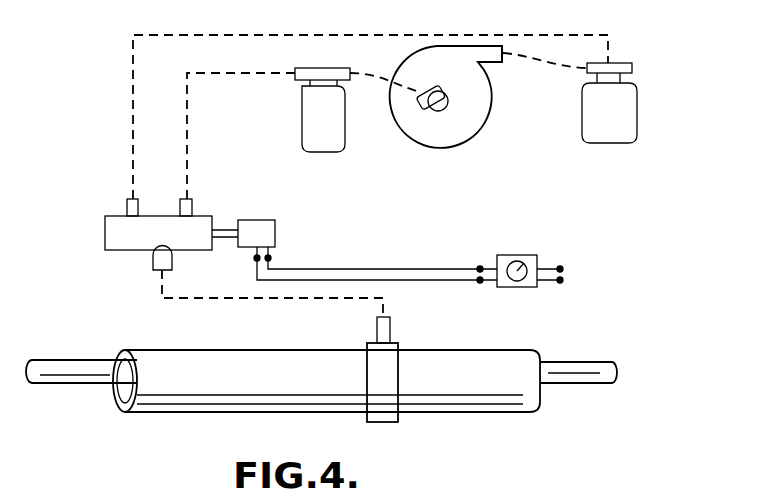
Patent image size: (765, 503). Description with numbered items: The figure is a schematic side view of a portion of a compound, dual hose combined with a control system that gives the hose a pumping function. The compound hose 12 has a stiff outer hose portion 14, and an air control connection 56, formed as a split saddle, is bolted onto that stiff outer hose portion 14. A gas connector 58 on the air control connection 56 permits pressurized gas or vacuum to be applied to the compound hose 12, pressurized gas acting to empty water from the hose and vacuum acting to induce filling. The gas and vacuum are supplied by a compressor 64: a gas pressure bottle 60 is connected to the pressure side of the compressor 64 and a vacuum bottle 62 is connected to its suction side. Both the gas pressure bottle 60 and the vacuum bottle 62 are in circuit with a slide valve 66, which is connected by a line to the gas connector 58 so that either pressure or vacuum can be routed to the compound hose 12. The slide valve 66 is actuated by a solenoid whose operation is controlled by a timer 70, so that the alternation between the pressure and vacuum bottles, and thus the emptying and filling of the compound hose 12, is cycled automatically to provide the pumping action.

The compound hose 12 is at (133, 340).
The stiff outer hose portion 14 is at (170, 412).
The air control connection 56 is at (404, 425).
The gas connector 58 is at (392, 332).
The gas pressure bottle 60 is at (637, 115).
The vacuum bottle 62 is at (302, 127).
The compressor 64 is at (445, 152).
The slide valve 66 is at (105, 222).
The timer 70 is at (520, 255).